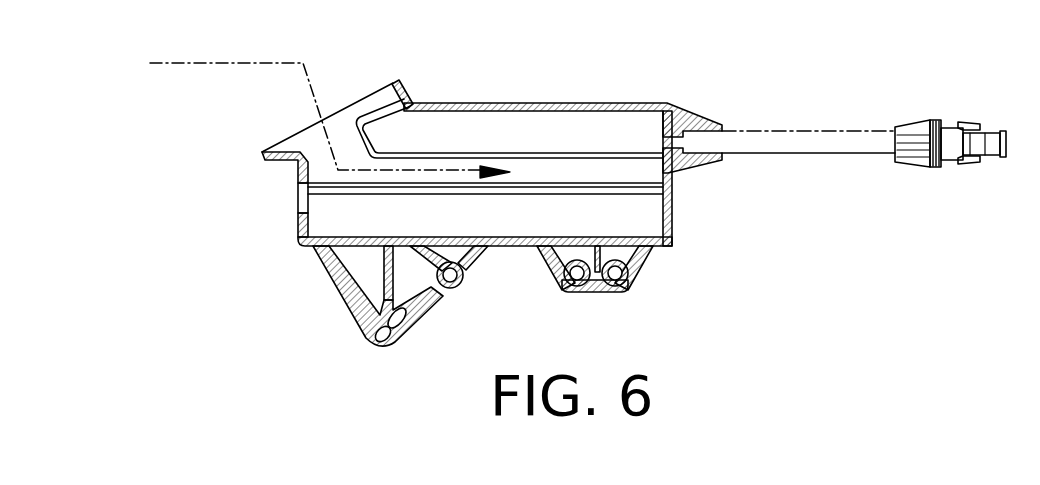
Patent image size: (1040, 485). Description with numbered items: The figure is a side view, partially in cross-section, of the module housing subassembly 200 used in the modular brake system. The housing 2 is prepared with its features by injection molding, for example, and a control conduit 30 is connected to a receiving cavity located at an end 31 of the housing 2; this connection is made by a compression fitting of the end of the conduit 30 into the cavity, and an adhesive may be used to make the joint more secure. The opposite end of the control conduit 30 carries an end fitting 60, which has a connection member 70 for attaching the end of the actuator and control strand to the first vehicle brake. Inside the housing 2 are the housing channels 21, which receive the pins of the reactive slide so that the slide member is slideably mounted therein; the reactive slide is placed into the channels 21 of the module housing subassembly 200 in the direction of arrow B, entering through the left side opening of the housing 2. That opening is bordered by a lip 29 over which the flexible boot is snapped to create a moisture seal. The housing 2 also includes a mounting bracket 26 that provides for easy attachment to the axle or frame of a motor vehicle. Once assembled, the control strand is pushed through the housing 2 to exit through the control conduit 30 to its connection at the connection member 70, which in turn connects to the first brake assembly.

The housing 2 is at (518, 104).
The housing channels 21 is at (643, 173).
The mounting bracket 26 is at (461, 276).
The lip 29 is at (399, 91).
The control conduit 30 is at (777, 131).
The end 31 is at (700, 114).
The end fitting 60 is at (897, 128).
The connection member 70 is at (978, 133).
The module housing subassembly 200 is at (240, 264).
The arrow B is at (330, 102).